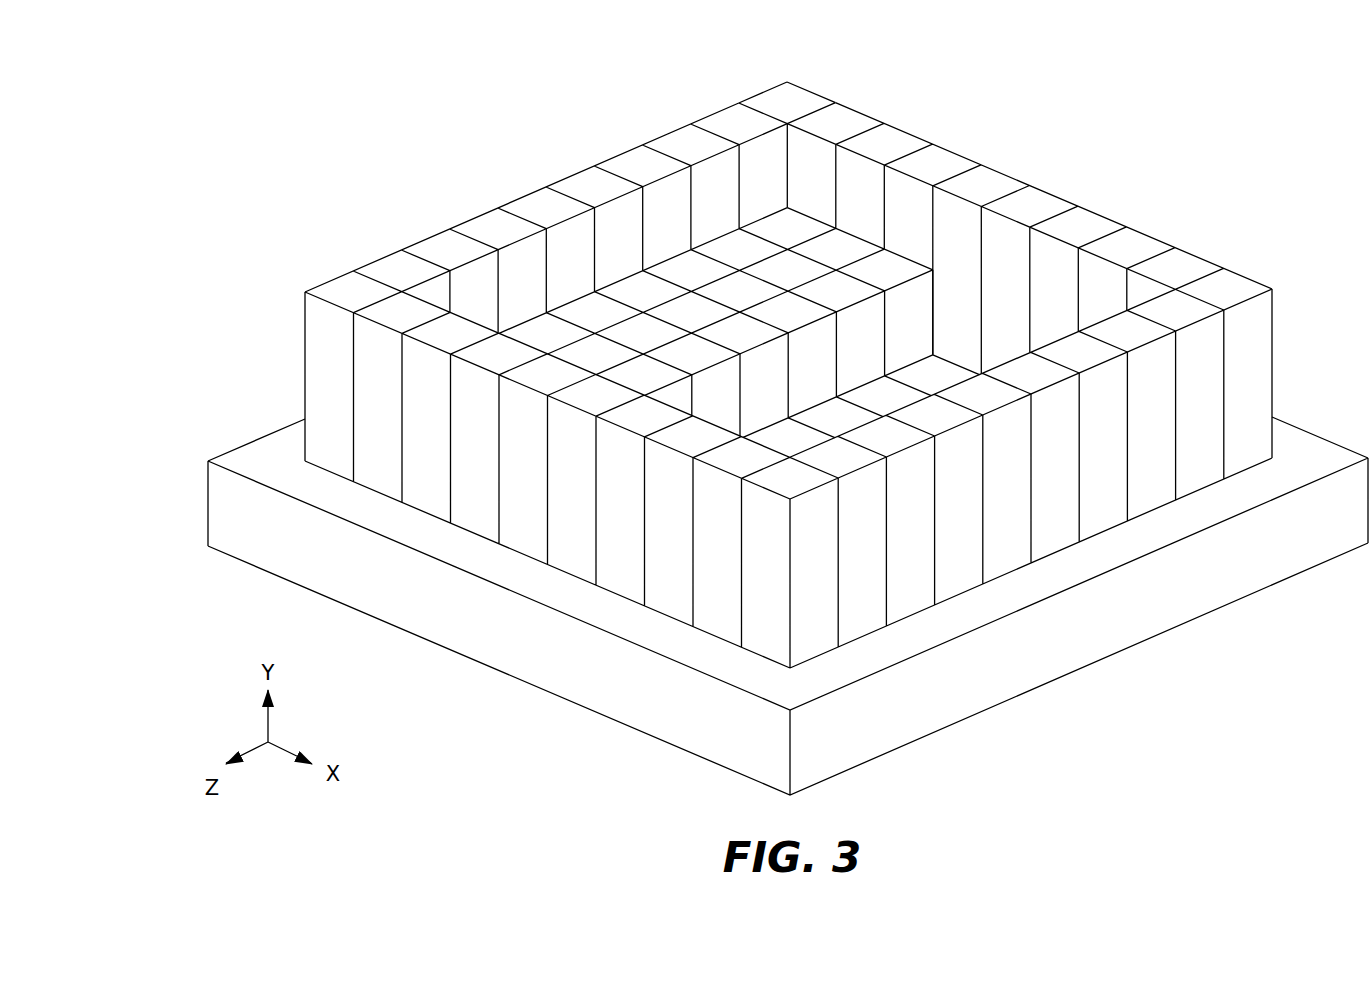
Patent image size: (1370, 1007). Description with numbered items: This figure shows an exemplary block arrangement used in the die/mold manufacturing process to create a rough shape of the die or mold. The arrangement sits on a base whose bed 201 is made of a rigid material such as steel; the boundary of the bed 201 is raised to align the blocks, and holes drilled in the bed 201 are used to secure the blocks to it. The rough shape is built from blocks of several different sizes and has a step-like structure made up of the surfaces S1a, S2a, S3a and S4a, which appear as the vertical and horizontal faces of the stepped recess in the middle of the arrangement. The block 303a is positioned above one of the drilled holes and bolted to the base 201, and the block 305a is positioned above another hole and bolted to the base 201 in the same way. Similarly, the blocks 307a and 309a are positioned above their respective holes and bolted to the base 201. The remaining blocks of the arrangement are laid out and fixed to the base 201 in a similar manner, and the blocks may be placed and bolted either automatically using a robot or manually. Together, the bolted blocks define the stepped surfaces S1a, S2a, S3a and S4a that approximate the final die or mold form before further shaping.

The bed 201 is at (1028, 688).
The block 303a is at (792, 90).
The block 305a is at (715, 122).
The block 307a is at (865, 114).
The block 309a is at (800, 230).
The surface S1a is at (603, 229).
The surface S2a is at (546, 316).
The surface S3a is at (880, 314).
The surface S4a is at (953, 364).